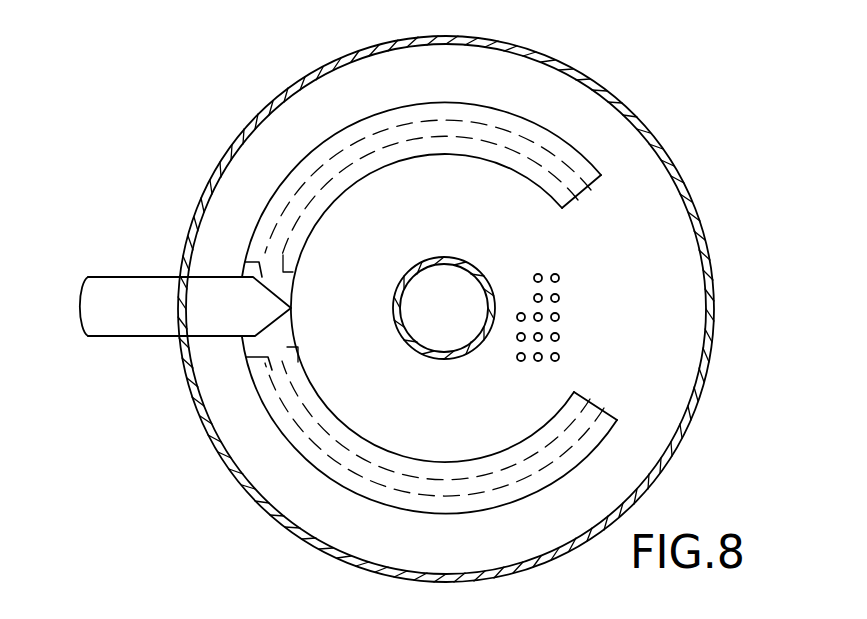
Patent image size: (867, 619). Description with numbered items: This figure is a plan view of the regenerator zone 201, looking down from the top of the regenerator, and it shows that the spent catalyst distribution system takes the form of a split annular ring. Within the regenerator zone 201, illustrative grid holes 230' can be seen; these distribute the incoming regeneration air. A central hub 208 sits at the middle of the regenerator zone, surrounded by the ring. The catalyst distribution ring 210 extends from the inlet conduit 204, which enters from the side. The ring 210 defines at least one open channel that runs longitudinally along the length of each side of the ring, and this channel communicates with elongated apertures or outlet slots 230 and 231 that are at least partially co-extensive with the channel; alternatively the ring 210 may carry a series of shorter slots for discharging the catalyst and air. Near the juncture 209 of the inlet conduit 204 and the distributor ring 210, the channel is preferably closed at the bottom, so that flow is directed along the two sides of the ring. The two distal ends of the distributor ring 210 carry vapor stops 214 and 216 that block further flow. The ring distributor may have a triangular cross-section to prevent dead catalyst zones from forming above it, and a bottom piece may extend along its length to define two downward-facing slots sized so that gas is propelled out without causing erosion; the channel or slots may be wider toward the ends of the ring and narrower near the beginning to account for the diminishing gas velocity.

The regenerator zone 201 is at (629, 92).
The inlet conduit 204 is at (142, 338).
The central hub 208 is at (413, 265).
The juncture 209 is at (253, 262).
The catalyst distribution ring 210 is at (387, 110).
The vapor stop 214 is at (594, 191).
The vapor stop 216 is at (588, 398).
The outlet slot 230 is at (387, 425).
The grid holes 230' is at (502, 346).
The outlet slot 231 is at (312, 398).